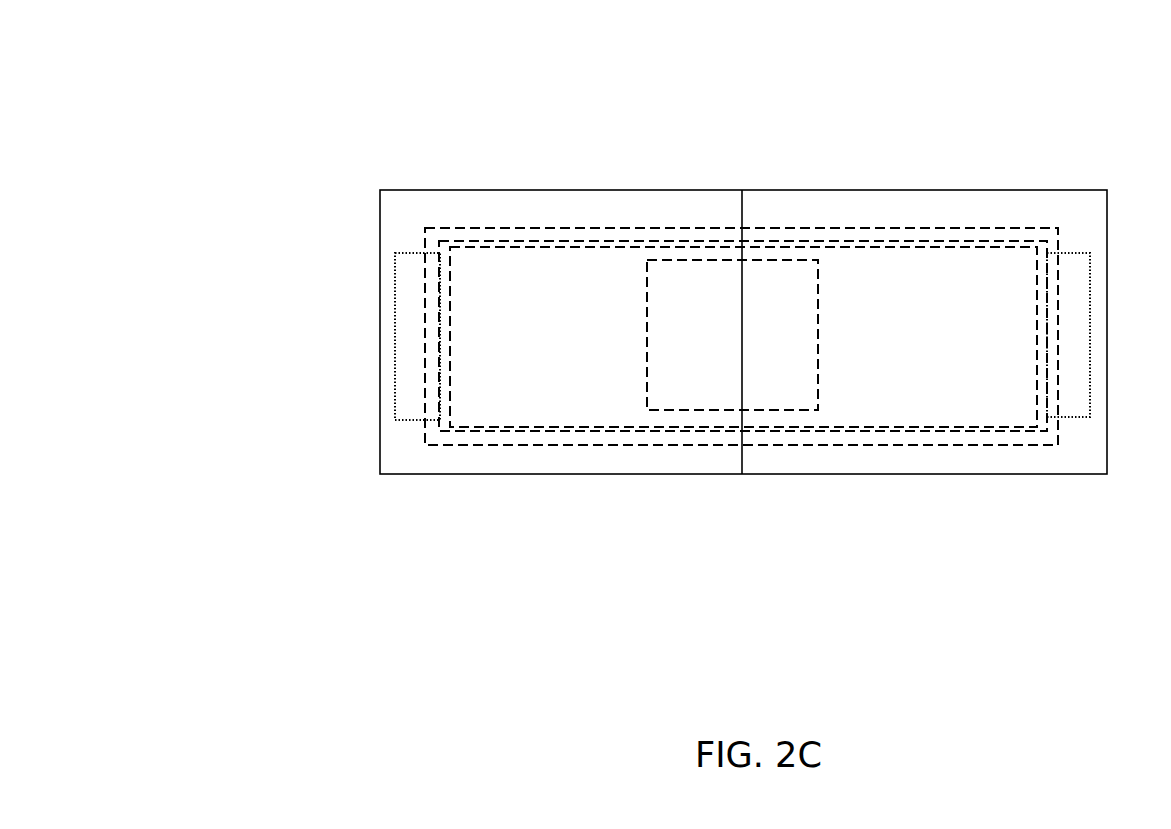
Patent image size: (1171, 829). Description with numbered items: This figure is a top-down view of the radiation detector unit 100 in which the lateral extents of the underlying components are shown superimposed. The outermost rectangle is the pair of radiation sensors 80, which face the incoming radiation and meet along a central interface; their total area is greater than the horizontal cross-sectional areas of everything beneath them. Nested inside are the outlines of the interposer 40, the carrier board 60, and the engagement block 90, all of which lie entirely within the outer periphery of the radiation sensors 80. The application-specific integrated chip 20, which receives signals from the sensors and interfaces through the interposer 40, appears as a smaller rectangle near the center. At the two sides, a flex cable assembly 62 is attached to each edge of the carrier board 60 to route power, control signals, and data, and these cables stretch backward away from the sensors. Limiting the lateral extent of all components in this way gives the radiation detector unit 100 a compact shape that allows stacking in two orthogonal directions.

The radiation detector unit 100 is at (331, 136).
The radiation sensor 80 is at (576, 202).
The interposer 40 is at (1078, 244).
The carrier board 60 is at (1045, 293).
The engagement block 90 is at (1038, 345).
The application-specific integrated chip 20 is at (833, 336).
The flex cable assembly 62 is at (415, 420).